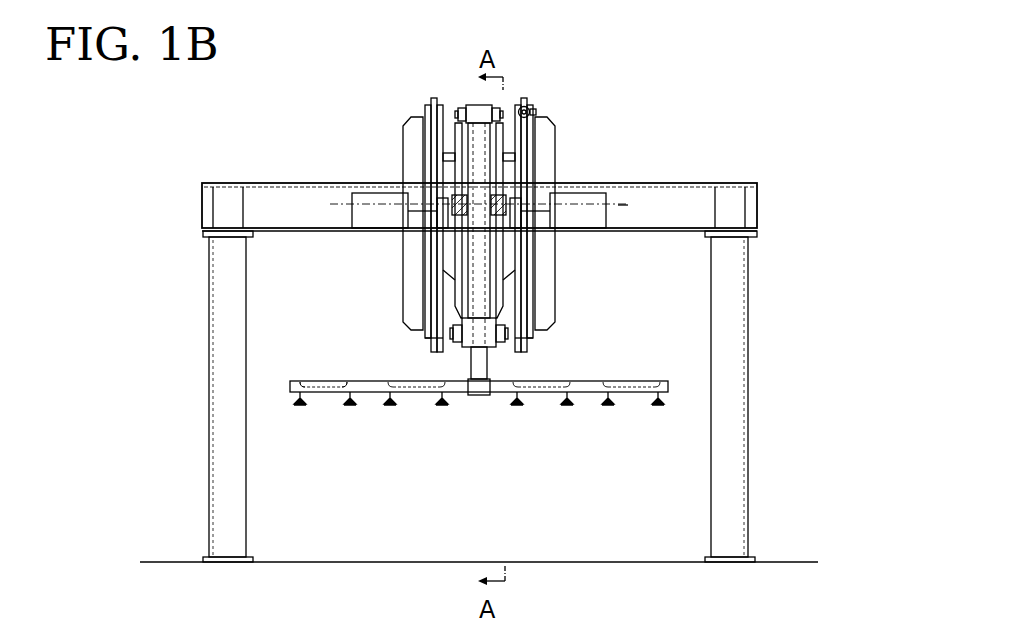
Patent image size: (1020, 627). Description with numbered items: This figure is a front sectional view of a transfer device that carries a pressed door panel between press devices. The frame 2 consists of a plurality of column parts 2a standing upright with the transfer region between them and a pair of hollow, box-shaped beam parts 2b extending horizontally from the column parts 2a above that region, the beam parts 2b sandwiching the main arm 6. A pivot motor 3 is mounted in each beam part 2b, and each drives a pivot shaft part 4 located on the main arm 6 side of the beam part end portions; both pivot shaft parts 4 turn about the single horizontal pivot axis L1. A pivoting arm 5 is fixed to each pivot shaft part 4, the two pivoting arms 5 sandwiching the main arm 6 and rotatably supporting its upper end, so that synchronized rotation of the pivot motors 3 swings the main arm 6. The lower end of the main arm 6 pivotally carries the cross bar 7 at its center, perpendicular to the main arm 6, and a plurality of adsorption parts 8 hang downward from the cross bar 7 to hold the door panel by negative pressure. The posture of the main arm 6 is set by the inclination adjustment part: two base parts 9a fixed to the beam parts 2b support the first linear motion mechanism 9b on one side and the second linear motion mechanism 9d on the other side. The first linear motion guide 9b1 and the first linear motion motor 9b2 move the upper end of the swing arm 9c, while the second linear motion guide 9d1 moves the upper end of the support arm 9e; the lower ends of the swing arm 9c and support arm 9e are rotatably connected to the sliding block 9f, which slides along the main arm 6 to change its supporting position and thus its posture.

The frame 2 is at (483, 332).
The column part 2a is at (220, 333).
The beam part 2b is at (275, 182).
The pivot motor 3 is at (372, 228).
The pivot shaft part 4 is at (443, 157).
The pivoting arm 5 is at (457, 125).
The main arm 6 is at (481, 360).
The cross bar 7 is at (362, 392).
The adsorption part 8 is at (300, 407).
The base part 9a is at (410, 130).
The first linear motion mechanism 9b is at (537, 97).
The first linear motion guide 9b1 is at (520, 338).
The first linear motion motor 9b2 is at (538, 111).
The swing arm 9c is at (503, 277).
The second linear motion mechanism 9d is at (421, 95).
The second linear motion guide 9d1 is at (438, 338).
The support arm 9e is at (455, 277).
The sliding block 9f is at (464, 346).
The pivot axis L1 is at (623, 205).